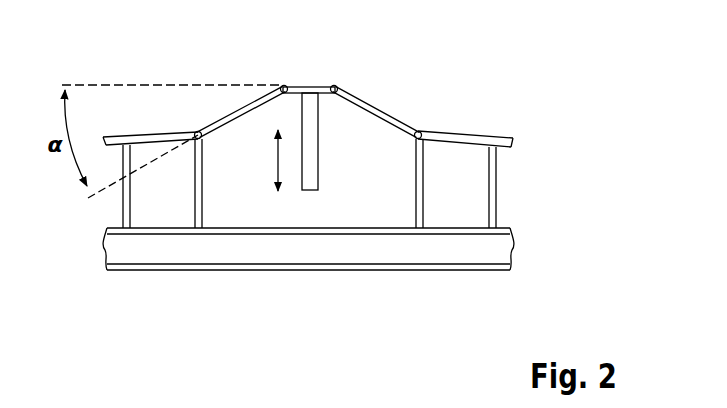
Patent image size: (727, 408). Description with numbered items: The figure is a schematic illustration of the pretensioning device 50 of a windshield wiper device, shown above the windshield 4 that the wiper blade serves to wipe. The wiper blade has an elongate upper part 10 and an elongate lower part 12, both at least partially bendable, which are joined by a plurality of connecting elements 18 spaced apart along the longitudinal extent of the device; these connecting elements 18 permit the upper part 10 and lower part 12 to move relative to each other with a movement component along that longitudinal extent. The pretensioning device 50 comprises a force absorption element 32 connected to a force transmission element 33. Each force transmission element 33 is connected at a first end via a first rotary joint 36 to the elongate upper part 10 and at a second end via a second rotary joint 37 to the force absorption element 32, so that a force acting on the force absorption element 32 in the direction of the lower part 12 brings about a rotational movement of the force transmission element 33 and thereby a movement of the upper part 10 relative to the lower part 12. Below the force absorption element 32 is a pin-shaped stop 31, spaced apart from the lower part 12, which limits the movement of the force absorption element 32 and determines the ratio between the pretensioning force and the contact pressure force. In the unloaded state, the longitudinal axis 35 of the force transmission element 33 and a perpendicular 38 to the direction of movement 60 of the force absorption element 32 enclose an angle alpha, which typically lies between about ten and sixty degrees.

The windshield 4 is at (125, 271).
The elongate upper part 10 is at (495, 137).
The elongate lower part 12 is at (472, 234).
The connecting elements 18 is at (420, 190).
The stop 31 is at (307, 173).
The force absorption element 32 is at (311, 87).
The force transmission element 33 is at (240, 112).
The longitudinal axis 35 is at (90, 196).
The first rotary joint 36 is at (283, 85).
The second rotary joint 37 is at (198, 133).
The perpendicular 38 is at (94, 84).
The pretensioning device 50 is at (374, 70).
The direction of movement 60 is at (275, 168).